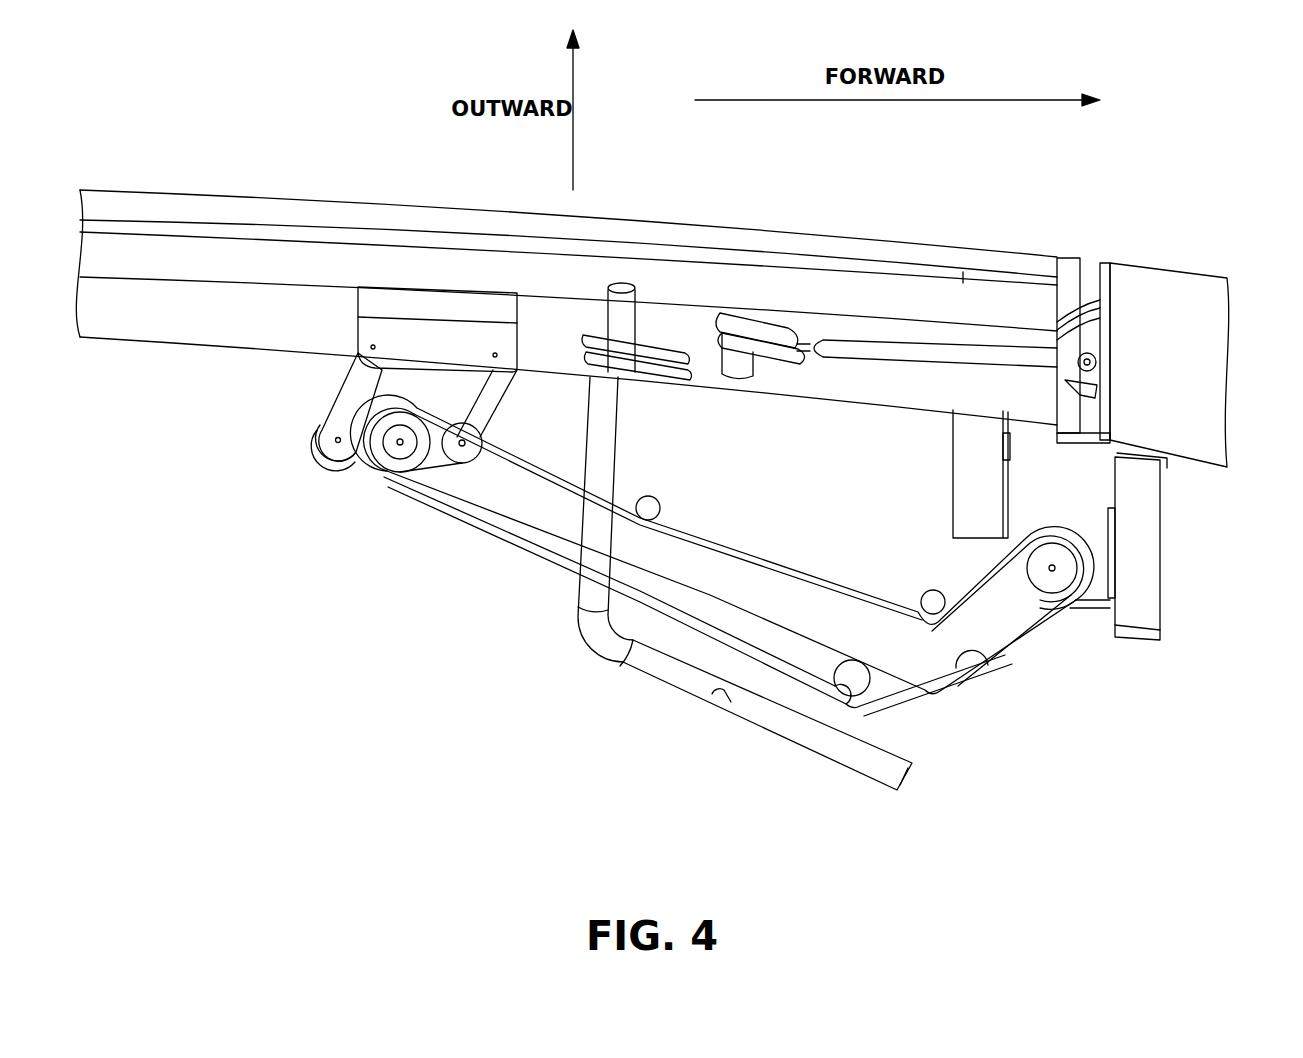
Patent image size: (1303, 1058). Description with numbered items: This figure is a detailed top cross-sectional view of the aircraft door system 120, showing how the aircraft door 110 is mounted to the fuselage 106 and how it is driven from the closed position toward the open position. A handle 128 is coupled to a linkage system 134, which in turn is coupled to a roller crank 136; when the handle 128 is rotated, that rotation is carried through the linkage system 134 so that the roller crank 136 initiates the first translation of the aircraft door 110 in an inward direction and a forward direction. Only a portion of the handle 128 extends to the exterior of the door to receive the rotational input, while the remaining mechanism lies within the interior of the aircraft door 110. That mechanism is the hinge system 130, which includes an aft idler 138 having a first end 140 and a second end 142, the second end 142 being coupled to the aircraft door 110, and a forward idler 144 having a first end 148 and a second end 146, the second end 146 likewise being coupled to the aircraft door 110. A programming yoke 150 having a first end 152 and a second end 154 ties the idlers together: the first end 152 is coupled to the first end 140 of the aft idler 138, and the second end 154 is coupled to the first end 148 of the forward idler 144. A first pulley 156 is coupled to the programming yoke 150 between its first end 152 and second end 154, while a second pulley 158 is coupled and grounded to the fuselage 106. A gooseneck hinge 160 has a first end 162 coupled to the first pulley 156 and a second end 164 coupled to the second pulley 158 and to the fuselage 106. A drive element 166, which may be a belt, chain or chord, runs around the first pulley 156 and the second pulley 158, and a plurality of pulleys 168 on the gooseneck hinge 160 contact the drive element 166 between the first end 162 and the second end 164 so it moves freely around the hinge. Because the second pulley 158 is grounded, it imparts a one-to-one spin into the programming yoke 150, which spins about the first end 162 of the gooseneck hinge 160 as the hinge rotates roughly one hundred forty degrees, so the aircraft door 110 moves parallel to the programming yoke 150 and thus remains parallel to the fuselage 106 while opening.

The fuselage 106 is at (1190, 492).
The aircraft door 110 is at (140, 350).
The aircraft door system 120 is at (118, 76).
The handle 128 is at (690, 700).
The hinge system 130 is at (517, 590).
The linkage system 134 is at (818, 322).
The roller crank 136 is at (1106, 392).
The aft idler 138 is at (333, 397).
The first end of the aft idler 140 is at (300, 436).
The second end of the aft idler 142 is at (340, 348).
The forward idler 144 is at (500, 403).
The second end of the forward idler 146 is at (522, 358).
The first end of the forward idler 148 is at (495, 460).
The programming yoke 150 is at (372, 468).
The first end of the programming yoke 152 is at (305, 465).
The second end of the programming yoke 154 is at (470, 485).
The first pulley 156 is at (395, 475).
The second pulley 158 is at (1052, 598).
The gooseneck hinge 160 is at (700, 560).
The first end of the gooseneck hinge 162 is at (375, 468).
The second end of the gooseneck hinge 164 is at (1072, 600).
The drive element 166 is at (555, 582).
The plurality of pulleys 168 is at (643, 497).